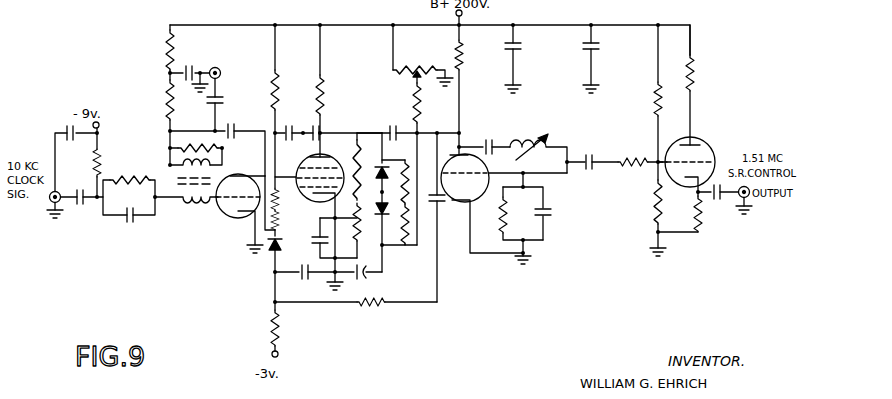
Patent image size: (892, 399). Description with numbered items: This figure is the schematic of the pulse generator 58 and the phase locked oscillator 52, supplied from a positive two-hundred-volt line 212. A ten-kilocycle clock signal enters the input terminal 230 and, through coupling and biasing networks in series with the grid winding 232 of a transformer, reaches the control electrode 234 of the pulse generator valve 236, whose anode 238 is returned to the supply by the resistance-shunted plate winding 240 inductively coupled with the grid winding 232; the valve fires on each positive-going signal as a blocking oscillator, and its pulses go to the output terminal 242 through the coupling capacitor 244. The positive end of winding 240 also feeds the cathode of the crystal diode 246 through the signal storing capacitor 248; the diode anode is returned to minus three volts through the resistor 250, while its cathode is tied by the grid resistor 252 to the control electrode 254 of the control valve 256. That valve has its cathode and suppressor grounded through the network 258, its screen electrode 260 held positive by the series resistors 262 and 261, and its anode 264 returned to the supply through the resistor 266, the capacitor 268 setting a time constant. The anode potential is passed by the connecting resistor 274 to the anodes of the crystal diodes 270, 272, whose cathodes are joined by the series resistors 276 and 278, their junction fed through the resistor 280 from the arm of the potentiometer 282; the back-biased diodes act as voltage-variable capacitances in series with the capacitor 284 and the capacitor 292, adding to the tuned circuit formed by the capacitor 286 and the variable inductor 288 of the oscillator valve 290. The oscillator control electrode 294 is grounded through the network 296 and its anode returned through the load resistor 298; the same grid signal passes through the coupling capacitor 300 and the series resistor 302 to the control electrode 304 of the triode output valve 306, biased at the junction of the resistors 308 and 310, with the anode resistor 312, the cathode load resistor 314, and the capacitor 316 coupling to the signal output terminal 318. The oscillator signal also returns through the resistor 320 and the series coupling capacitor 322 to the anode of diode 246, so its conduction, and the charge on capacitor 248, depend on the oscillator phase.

The phase locked oscillator 52 is at (371, 94).
The pulse generator 58 is at (212, 50).
The B+ supply line 212 is at (430, 27).
The input terminal 230 is at (49, 206).
The grid winding 232 is at (186, 206).
The control electrode 234 is at (238, 226).
The pulse generator valve 236 is at (240, 240).
The anode 238 is at (250, 172).
The plate winding 240 is at (172, 163).
The output terminal 242 is at (221, 69).
The coupling capacitor 244 is at (185, 122).
The crystal diode 246 is at (297, 301).
The signal storing capacitor 248 is at (235, 98).
The resistor 250 is at (268, 330).
The grid resistor 252 is at (290, 222).
The control electrode 254 is at (290, 199).
The control valve 256 is at (346, 135).
The parallel resistor capacitor network 258 is at (291, 251).
The screen electrode 260 is at (300, 168).
The series resistor 261 is at (367, 230).
The series resistor 262 is at (276, 88).
The anode 264 is at (342, 132).
The resistor 266 is at (322, 90).
The capacitor 268 is at (290, 124).
The crystal diode 270 is at (390, 162).
The crystal diode 272 is at (395, 200).
The connecting resistor 274 is at (365, 125).
The series resistor 276 is at (390, 231).
The series resistor 278 is at (418, 226).
The resistor 280 is at (421, 108).
The potentiometer 282 is at (420, 68).
The coupling capacitor 284 is at (385, 128).
The capacitor 286 is at (482, 140).
The variable inductor 288 is at (530, 140).
The oscillator valve 290 is at (481, 214).
The capacitor 292 is at (372, 272).
The control electrode 294 is at (480, 172).
The parallel resistor-capacitor network 296 is at (547, 226).
The load resistor 298 is at (466, 62).
The coupling capacitor 300 is at (595, 165).
The series resistor 302 is at (630, 158).
The control electrode 304 is at (706, 135).
The triode output valve 306 is at (698, 140).
The series resistor 308 is at (654, 94).
The series resistor 310 is at (655, 220).
The anode resistor 312 is at (697, 66).
The cathode load resistor 314 is at (703, 215).
The capacitor 316 is at (712, 178).
The signal output terminal 318 is at (750, 200).
The resistor 320 is at (371, 308).
The series coupling capacitor 322 is at (441, 206).